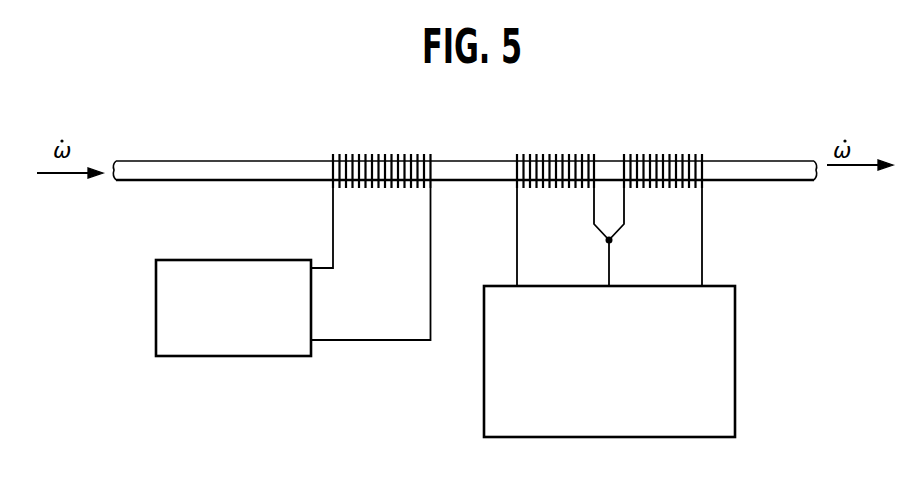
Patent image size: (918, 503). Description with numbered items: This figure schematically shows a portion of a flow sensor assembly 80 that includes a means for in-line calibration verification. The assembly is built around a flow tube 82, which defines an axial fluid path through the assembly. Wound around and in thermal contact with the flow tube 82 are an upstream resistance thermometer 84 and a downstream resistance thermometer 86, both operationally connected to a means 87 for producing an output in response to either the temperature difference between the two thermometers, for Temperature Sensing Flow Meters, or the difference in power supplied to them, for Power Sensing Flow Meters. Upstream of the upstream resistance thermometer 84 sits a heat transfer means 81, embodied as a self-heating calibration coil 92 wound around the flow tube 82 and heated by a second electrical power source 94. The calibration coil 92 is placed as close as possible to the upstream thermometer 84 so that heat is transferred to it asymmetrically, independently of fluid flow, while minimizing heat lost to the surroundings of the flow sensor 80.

The flow sensor assembly 80 is at (216, 135).
The means for asymmetrically transferring heat 81 is at (141, 304).
The flow tube 82 is at (258, 172).
The upstream resistance thermometer 84 is at (551, 153).
The downstream resistance thermometer 86 is at (667, 153).
The means for producing an output 87 is at (483, 375).
The calibration coil 92 is at (378, 154).
The second electrical power source 94 is at (248, 357).